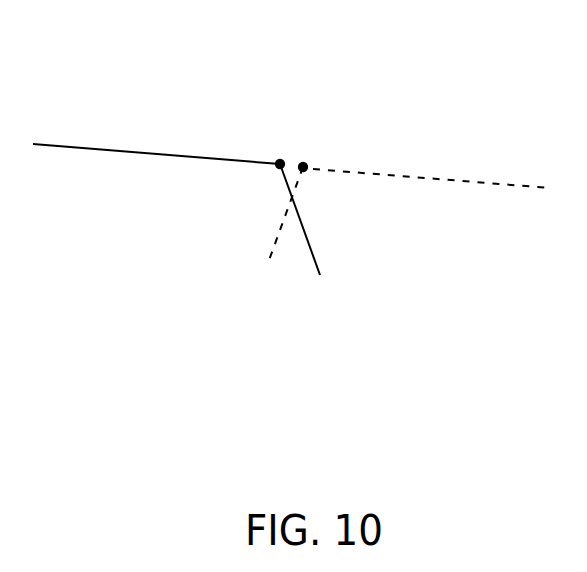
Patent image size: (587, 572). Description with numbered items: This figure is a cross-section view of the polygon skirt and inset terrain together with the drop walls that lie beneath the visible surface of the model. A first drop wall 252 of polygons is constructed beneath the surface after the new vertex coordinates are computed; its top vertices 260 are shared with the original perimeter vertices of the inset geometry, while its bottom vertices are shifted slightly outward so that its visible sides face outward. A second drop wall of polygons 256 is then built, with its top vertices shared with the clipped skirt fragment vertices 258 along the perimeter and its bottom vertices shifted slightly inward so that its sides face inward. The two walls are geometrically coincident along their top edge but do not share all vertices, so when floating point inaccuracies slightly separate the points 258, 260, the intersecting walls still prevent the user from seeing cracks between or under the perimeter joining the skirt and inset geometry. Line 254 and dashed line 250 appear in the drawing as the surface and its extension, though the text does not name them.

The dashed reference line (extended first line) 250 is at (512, 185).
The first drop wall 252 is at (267, 281).
The first line 254 is at (52, 144).
The second drop wall of polygons 256 is at (320, 270).
The clipped skirt fragment vertices 258 is at (280, 160).
The top vertices 260 is at (305, 165).